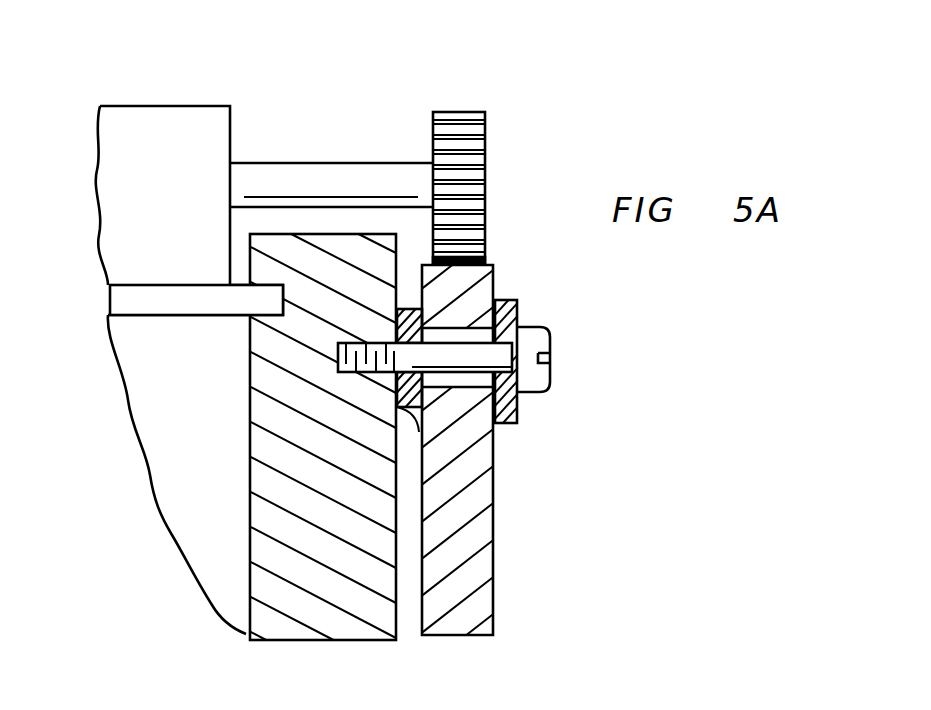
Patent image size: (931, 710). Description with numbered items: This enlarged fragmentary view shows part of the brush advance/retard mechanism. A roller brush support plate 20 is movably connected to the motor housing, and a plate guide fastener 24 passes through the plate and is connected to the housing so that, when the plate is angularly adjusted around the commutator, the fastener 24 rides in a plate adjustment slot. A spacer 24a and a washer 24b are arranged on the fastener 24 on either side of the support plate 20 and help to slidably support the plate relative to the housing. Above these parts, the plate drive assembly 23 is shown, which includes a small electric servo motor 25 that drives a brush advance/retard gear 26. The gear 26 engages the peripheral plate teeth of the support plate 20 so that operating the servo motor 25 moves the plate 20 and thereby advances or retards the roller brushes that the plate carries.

The roller brush support plate 20 is at (493, 534).
The plate drive assembly 23 is at (288, 146).
The plate guide fastener 24 is at (550, 338).
The spacer 24a is at (413, 414).
The washer 24b is at (500, 423).
The electric servo motor 25 is at (136, 106).
The brush advance/retard gear 26 is at (457, 112).